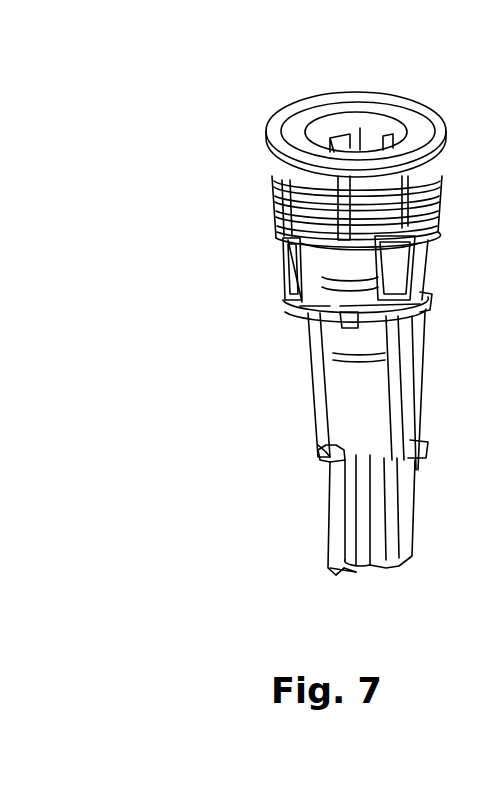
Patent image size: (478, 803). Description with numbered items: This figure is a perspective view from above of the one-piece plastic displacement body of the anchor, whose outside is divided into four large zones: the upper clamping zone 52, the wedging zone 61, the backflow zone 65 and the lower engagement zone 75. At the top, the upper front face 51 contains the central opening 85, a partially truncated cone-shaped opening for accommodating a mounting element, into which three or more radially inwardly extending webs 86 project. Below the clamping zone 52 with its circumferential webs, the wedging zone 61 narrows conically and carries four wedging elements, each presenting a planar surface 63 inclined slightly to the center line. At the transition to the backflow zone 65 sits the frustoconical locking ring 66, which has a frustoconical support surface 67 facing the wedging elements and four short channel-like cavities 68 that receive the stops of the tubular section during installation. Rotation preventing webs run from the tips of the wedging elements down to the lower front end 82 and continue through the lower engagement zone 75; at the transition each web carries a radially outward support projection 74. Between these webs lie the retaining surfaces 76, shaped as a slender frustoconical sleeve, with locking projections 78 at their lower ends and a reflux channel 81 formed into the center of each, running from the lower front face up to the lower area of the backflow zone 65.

The upper front face 51 is at (297, 139).
The upper clamping zone 52 is at (268, 177).
The wedging zone 61 is at (282, 272).
The planar surface 63 is at (296, 257).
The backflow zone 65 is at (302, 393).
The locking ring 66 is at (335, 337).
The support surface 67 is at (330, 306).
The channel-like cavities 68 is at (348, 318).
The support projection 74 is at (318, 470).
The lower engagement zone 75 is at (312, 517).
The retaining surfaces 76 is at (383, 533).
The locking projections 78 is at (343, 568).
The reflux channel 81 is at (364, 497).
The lower front end 82 is at (322, 448).
The central opening 85 is at (338, 137).
The radially inwardly extending webs 86 is at (368, 137).